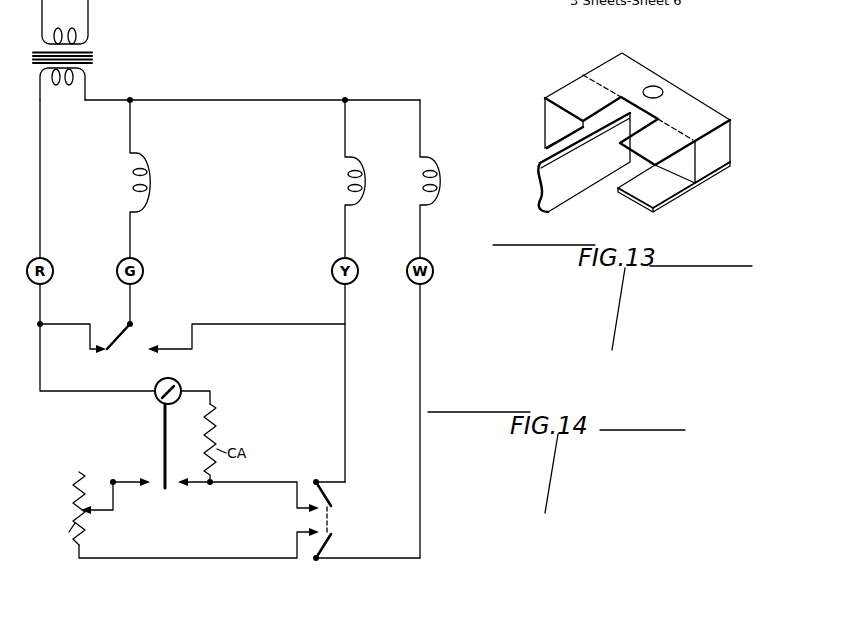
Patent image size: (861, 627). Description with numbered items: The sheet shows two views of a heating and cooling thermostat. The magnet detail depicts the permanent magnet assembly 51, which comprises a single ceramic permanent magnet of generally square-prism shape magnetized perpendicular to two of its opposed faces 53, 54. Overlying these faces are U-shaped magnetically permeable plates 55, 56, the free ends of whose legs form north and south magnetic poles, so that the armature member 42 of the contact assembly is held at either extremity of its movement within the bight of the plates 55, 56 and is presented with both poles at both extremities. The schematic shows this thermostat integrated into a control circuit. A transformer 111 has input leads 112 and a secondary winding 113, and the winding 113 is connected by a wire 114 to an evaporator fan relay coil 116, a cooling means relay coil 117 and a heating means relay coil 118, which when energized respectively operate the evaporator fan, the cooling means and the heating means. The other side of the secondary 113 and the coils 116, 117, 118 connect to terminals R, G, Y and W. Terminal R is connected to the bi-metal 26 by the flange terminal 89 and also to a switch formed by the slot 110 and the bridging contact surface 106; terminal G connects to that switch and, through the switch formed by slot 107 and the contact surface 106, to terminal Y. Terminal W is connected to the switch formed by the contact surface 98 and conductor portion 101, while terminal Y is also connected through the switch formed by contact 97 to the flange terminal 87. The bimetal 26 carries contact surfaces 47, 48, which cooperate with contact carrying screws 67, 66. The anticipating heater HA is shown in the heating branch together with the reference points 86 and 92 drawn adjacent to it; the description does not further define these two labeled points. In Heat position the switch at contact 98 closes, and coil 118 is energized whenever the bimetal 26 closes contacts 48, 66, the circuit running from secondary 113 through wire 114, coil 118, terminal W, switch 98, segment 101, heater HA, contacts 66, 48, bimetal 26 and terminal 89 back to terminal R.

In FIG. 14, the bi-metal 26 is at (170, 404).
In FIG. 13, the armature member 42 is at (583, 177).
In FIG. 14, the contact surface 47 is at (182, 466).
In FIG. 14, the contact surface 48 is at (163, 469).
In FIG. 13, the permanent magnet assembly 51 is at (690, 86).
In FIG. 13, the opposed face 53 is at (720, 118).
In FIG. 13, the opposed face 54 is at (718, 177).
In FIG. 13, the U-shaped magnetically permeable plate 55 is at (606, 68).
In FIG. 13, the U-shaped magnetically permeable plate 56 is at (680, 198).
In FIG. 14, the contact carrying screw 66 is at (121, 487).
In FIG. 14, the contact carrying screw 67 is at (190, 489).
In FIG. 14, the heat anticipator resistor 86 is at (113, 481).
In FIG. 14, the flange terminal 87 is at (213, 487).
In FIG. 14, the flange terminal 89 is at (156, 393).
In FIG. 14, the tap 92 is at (100, 515).
In FIG. 14, the contact 97 is at (334, 501).
In FIG. 14, the contact surface 98 is at (334, 532).
In FIG. 14, the conductor blank segment 101 is at (270, 562).
In FIG. 14, the bridging contact surface 106 is at (111, 337).
In FIG. 14, the slot 107 is at (154, 347).
In FIG. 14, the slot 110 is at (102, 355).
In FIG. 14, the transformer 111 is at (97, 56).
In FIG. 14, the input leads 112 is at (88, 6).
In FIG. 14, the secondary winding 113 is at (67, 86).
In FIG. 14, the wire 114 is at (209, 100).
In FIG. 14, the evaporator fan relay coil 116 is at (147, 190).
In FIG. 14, the cooling means relay coil 117 is at (343, 187).
In FIG. 14, the heating means relay coil 118 is at (427, 172).